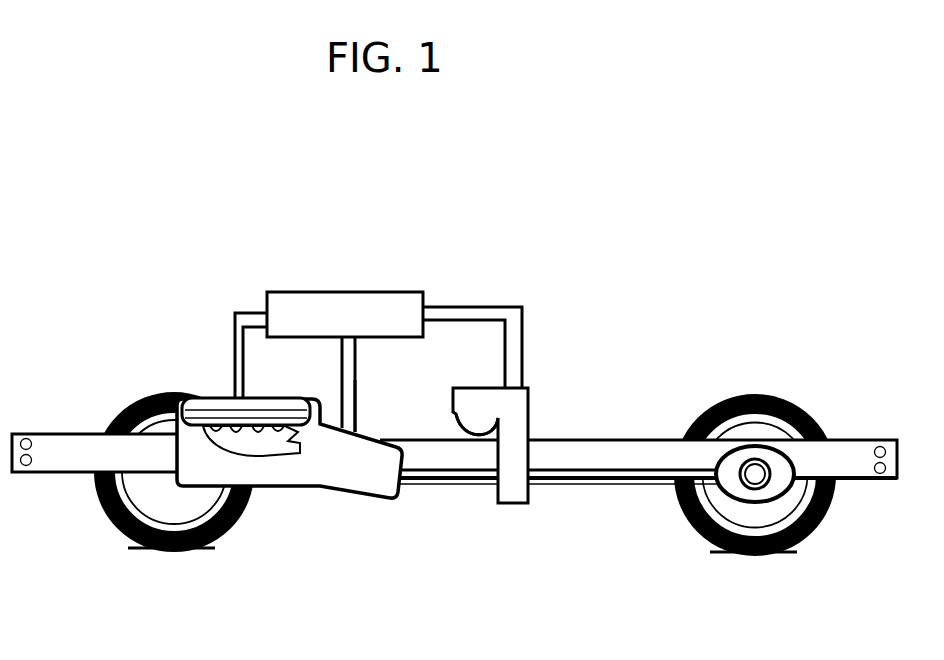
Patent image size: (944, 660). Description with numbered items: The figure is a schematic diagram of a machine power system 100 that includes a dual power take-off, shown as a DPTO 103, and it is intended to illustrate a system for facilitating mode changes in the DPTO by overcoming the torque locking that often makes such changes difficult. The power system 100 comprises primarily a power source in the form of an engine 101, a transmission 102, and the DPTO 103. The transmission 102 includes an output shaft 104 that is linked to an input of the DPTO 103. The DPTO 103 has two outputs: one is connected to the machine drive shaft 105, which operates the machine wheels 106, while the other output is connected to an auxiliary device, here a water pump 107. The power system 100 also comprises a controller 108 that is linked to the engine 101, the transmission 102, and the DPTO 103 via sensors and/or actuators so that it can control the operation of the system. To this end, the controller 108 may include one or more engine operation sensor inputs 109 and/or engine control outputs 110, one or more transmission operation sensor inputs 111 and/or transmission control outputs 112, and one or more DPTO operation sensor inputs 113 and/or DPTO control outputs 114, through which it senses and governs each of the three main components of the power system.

The machine power system 100 is at (563, 277).
The engine 101 is at (258, 489).
The transmission 102 is at (345, 490).
The DPTO 103 is at (540, 408).
The output shaft 104 is at (450, 486).
The machine drive shaft 105 is at (572, 487).
The machine wheels 106 is at (768, 525).
The water pump 107 is at (478, 406).
The controller 108 is at (402, 292).
The engine operation sensor inputs 109 is at (234, 311).
The engine control outputs 110 is at (244, 345).
The transmission operation sensor inputs 111 is at (342, 378).
The transmission control outputs 112 is at (356, 400).
The DPTO operation sensor inputs 113 is at (480, 319).
The DPTO control outputs 114 is at (522, 327).